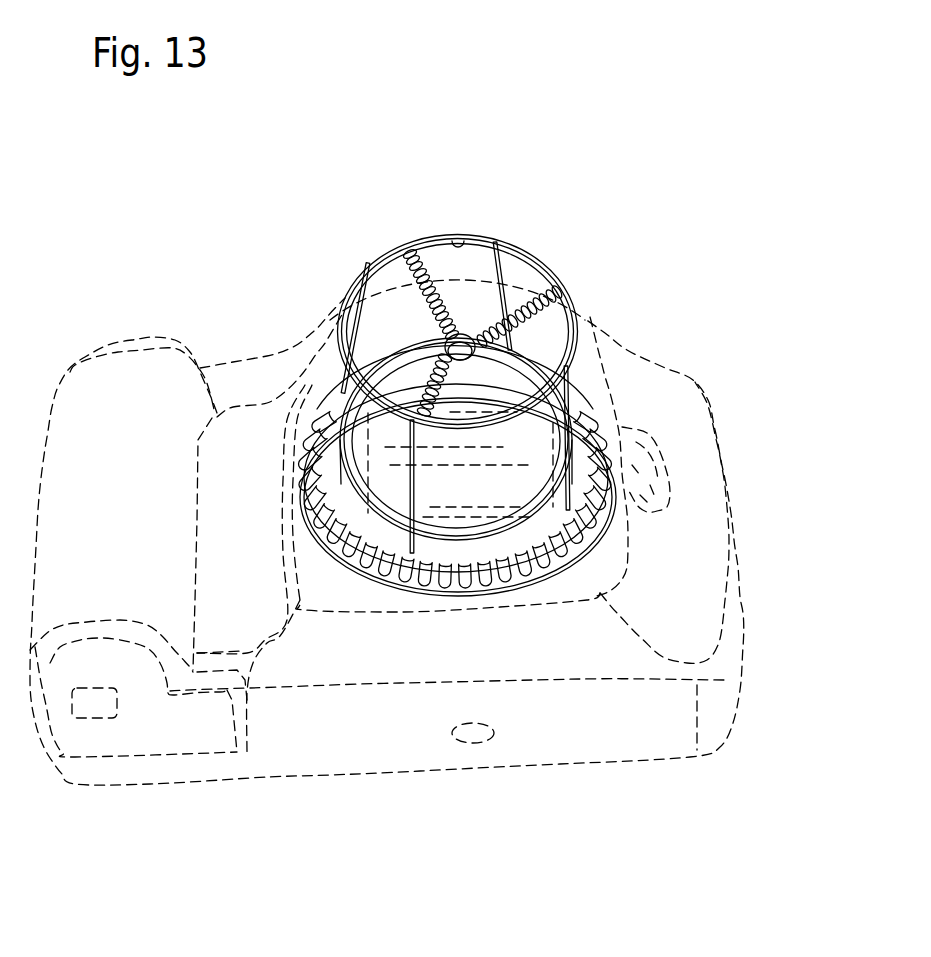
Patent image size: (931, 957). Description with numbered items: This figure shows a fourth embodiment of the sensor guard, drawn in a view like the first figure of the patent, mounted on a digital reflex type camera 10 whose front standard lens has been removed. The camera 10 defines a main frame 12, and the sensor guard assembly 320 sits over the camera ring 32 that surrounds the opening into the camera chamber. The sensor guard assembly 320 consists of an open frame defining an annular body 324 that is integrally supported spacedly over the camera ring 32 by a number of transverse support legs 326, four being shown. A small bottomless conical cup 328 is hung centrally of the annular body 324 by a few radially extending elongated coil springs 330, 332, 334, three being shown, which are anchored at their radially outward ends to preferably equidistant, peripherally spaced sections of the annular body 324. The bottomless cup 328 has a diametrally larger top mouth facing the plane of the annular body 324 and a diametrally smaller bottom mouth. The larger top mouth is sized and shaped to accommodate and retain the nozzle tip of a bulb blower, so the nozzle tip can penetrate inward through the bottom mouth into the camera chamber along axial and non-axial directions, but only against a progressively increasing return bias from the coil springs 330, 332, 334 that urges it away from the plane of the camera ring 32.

The digital reflex type camera 10 is at (748, 648).
The main frame 12 is at (256, 609).
The camera ring 32 is at (327, 415).
The sensor guard assembly 320 is at (476, 346).
The annular body 324 is at (462, 240).
The transverse support legs 326 is at (515, 258).
The bottomless conical cup 328 is at (440, 340).
The coil spring 330 is at (452, 336).
The coil spring 332 is at (362, 332).
The coil spring 334 is at (484, 332).